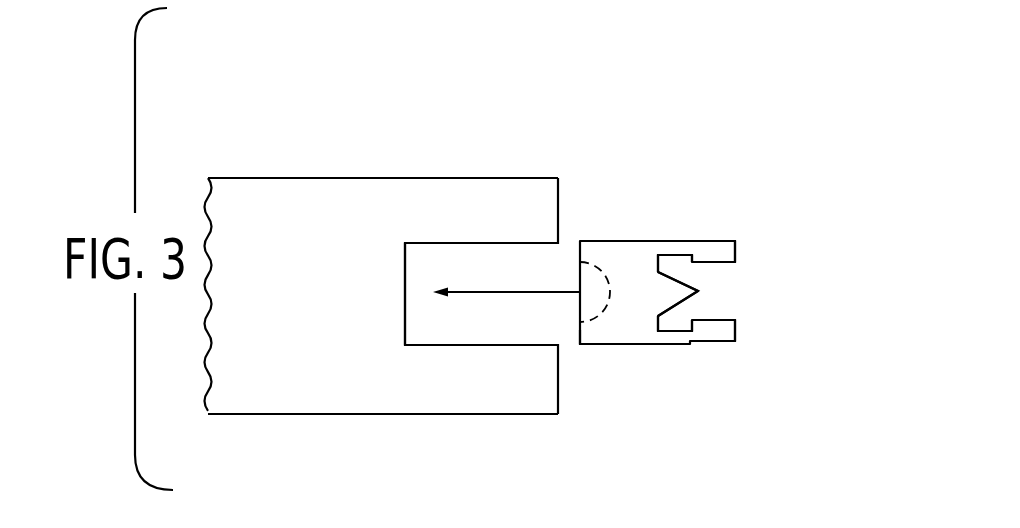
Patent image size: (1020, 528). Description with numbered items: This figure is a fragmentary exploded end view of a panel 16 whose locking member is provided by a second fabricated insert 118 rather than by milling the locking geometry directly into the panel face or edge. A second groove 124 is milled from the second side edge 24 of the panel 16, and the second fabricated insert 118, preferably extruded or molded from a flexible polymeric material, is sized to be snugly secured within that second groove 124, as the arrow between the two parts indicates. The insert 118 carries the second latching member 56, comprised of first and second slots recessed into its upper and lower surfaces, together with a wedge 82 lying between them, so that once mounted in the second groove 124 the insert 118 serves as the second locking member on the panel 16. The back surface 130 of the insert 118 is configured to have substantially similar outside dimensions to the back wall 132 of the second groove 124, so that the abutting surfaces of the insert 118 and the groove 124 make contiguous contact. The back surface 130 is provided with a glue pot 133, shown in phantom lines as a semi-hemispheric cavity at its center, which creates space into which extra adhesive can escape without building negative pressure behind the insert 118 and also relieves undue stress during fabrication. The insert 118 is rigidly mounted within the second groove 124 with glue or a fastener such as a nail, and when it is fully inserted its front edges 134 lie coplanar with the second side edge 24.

The first panel 16 is at (372, 202).
The second side edge 24 is at (558, 195).
The second groove 124 is at (482, 328).
The back wall 132 is at (403, 300).
The second fabricated insert 118 is at (635, 258).
The second latching member 56 is at (670, 263).
The front edges 134 is at (738, 242).
The wedge 82 is at (668, 289).
The glue pot 133 is at (592, 282).
The back surface 130 is at (581, 345).